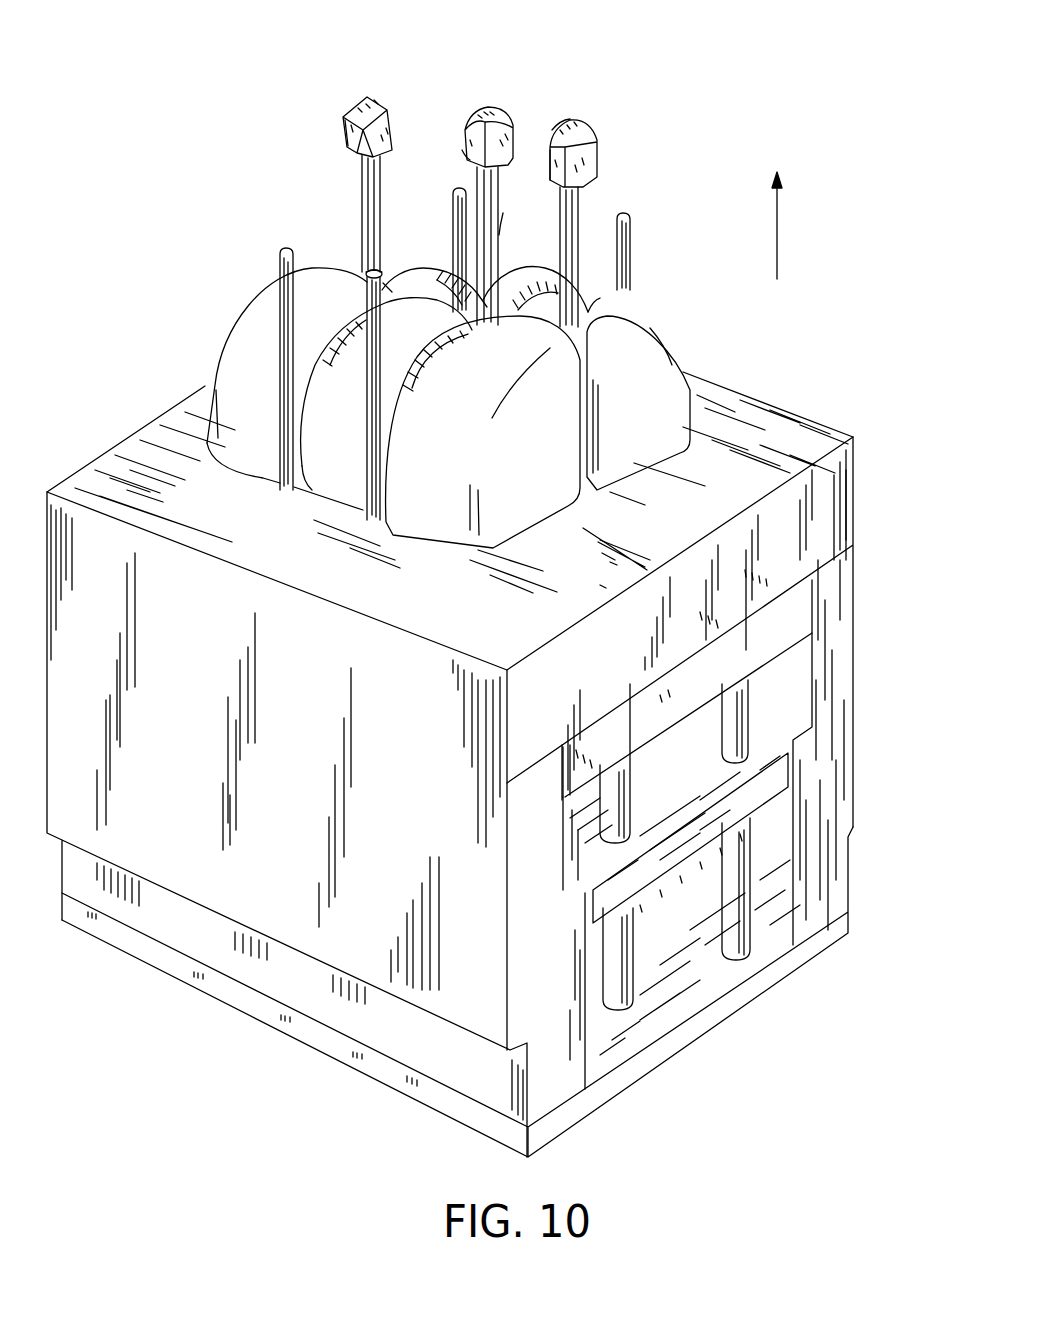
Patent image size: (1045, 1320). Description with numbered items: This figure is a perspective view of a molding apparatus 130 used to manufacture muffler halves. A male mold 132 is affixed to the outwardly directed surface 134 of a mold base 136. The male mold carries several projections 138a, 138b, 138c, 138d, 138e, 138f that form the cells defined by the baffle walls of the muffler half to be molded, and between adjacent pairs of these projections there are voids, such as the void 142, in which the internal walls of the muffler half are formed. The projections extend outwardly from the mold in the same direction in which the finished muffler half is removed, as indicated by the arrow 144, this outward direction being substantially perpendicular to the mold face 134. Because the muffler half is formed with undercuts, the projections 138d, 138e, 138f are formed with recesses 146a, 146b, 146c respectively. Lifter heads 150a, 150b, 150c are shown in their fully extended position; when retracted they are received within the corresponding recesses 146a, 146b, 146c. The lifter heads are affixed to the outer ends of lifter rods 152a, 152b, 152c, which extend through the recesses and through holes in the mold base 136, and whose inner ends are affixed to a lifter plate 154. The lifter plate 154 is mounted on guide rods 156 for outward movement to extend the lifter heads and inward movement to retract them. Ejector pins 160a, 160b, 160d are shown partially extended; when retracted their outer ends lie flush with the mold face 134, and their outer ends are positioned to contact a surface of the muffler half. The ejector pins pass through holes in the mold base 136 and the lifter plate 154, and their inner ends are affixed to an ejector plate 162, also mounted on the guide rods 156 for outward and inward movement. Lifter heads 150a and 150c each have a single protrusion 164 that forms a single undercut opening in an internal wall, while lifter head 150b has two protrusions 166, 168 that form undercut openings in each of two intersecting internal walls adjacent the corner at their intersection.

The molding apparatus 130 is at (766, 388).
The male mold 132 is at (445, 508).
The outwardly directed surface 134 is at (516, 638).
The mold base 136 is at (862, 642).
The projection 138a is at (456, 490).
The projection 138b is at (356, 485).
The projection 138c is at (268, 454).
The projection 138d is at (655, 463).
The projection 138e is at (533, 262).
The projection 138f is at (420, 252).
The void 142 is at (587, 472).
The arrow 144 is at (779, 252).
The recess 146a is at (596, 296).
The recess 146b is at (553, 120).
The recess 146c is at (383, 255).
The lifter head 150a is at (597, 137).
The lifter head 150b is at (493, 104).
The lifter head 150c is at (360, 107).
The lifter rod 152a is at (582, 210).
The lifter rod 152b is at (500, 190).
The lifter rod 152c is at (360, 210).
The lifter plate 154 is at (778, 644).
The guide rods 156 is at (747, 897).
The ejector pin 160a is at (365, 378).
The ejector pin 160b is at (278, 265).
The ejector pin 160d is at (458, 188).
The ejector plate 162 is at (655, 860).
The protrusion 164 is at (345, 133).
The protrusion 166 is at (462, 150).
The protrusion 168 is at (503, 213).